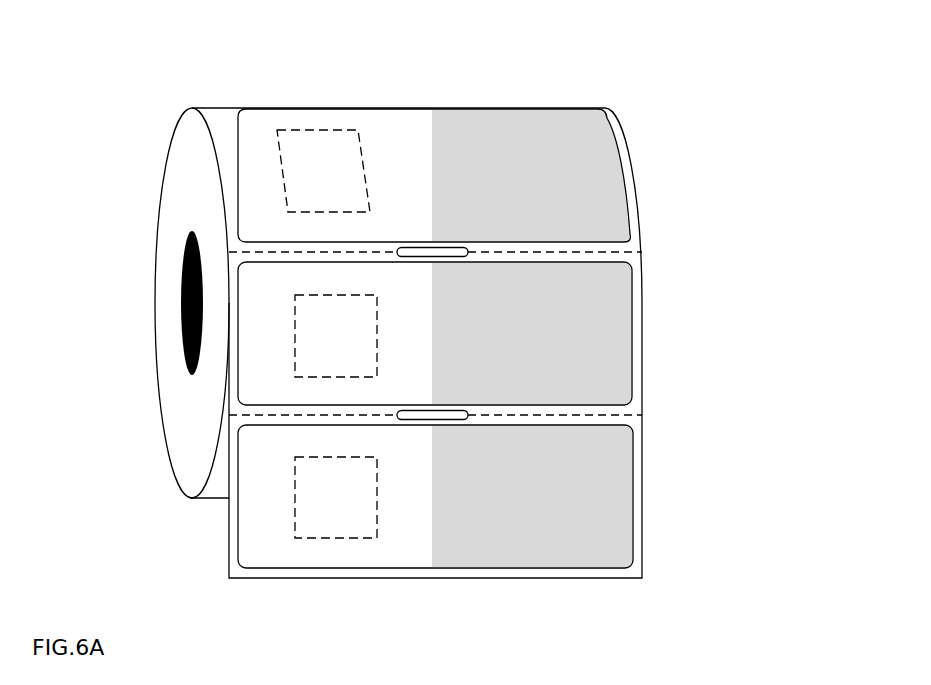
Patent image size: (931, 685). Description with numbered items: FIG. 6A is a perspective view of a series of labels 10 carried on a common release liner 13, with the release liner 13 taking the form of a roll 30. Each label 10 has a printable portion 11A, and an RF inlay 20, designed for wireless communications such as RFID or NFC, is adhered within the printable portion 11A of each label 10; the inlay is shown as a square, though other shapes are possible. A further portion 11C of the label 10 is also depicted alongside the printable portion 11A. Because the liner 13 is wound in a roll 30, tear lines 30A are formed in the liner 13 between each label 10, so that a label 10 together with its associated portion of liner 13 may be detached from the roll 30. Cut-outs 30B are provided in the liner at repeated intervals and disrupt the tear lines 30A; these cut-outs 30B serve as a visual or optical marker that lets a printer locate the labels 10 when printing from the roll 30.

The label 10 is at (598, 510).
The printable portion 11A is at (378, 120).
The second portion of label 11C is at (536, 128).
The support liner 13 is at (229, 546).
The RF inlay 20 is at (325, 483).
The roll 30 is at (755, 318).
The tear lines 30A is at (237, 414).
The cut-outs 30B is at (432, 419).